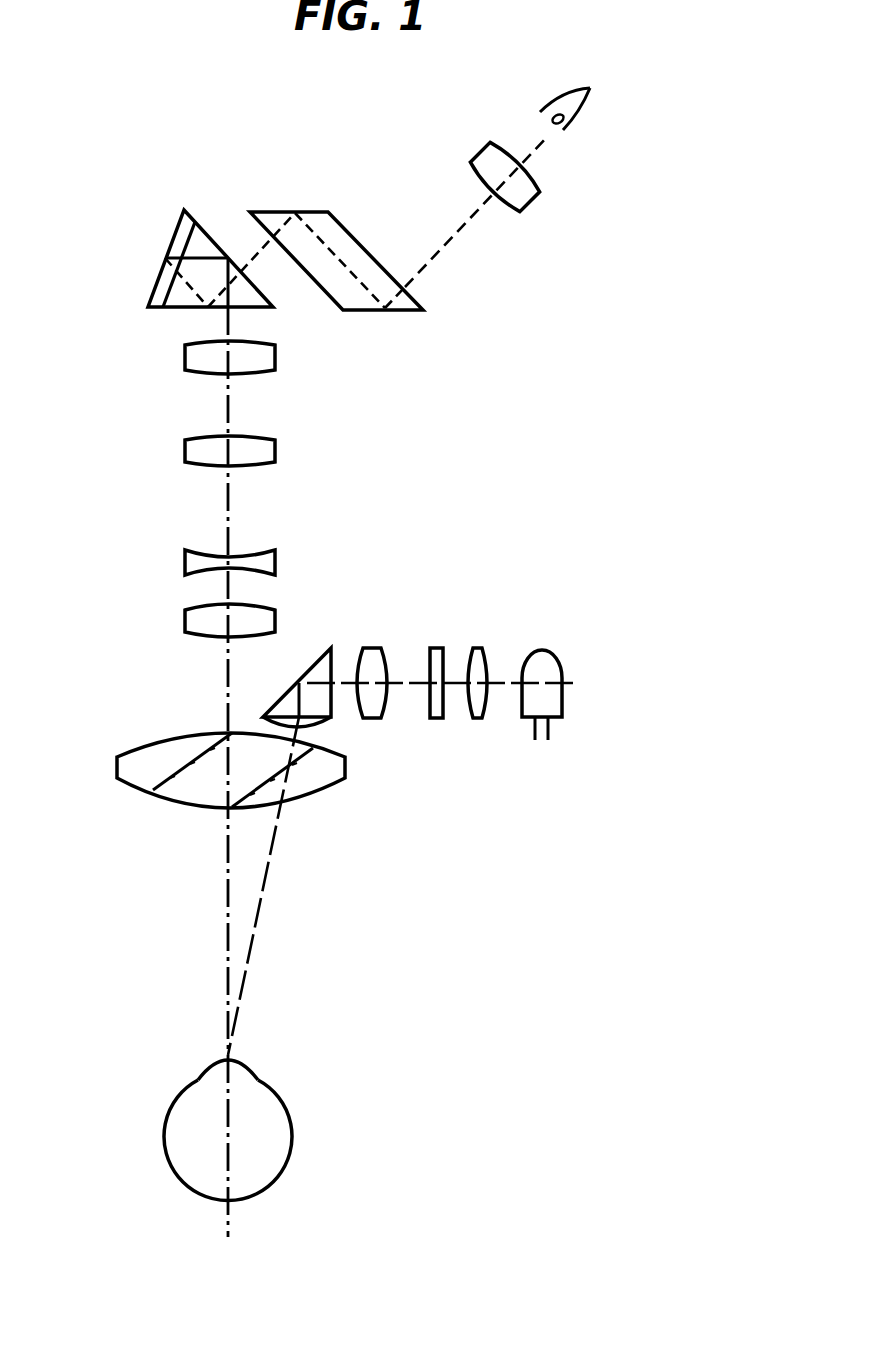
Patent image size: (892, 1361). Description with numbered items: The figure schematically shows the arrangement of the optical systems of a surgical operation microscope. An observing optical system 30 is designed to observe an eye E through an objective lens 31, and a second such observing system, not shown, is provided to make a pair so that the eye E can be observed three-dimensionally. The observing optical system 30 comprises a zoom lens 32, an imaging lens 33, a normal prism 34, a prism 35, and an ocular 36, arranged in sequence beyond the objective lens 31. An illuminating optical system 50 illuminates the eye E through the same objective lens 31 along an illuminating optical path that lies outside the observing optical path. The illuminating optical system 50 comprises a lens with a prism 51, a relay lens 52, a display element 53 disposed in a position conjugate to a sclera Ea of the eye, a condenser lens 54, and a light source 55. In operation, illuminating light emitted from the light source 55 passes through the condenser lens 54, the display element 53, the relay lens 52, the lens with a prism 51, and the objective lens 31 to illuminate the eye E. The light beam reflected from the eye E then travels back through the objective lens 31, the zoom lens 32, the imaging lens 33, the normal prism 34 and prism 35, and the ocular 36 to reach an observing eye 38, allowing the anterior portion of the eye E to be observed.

The observing optical system 30 is at (134, 483).
The objective lens 31 is at (191, 801).
The zoom lens 32 is at (158, 427).
The imaging lens 33 is at (183, 360).
The normal prism 34 is at (180, 208).
The prism 35 is at (270, 212).
The ocular 36 is at (532, 197).
The observing eye 38 is at (578, 108).
The illuminating optical system 50 is at (428, 760).
The lens with a prism 51 is at (325, 648).
The relay lens 52 is at (373, 647).
The display element 53 is at (433, 647).
The condenser lens 54 is at (477, 647).
The light source 55 is at (543, 650).
The eye E is at (295, 1158).
The sclera Ea is at (267, 1080).